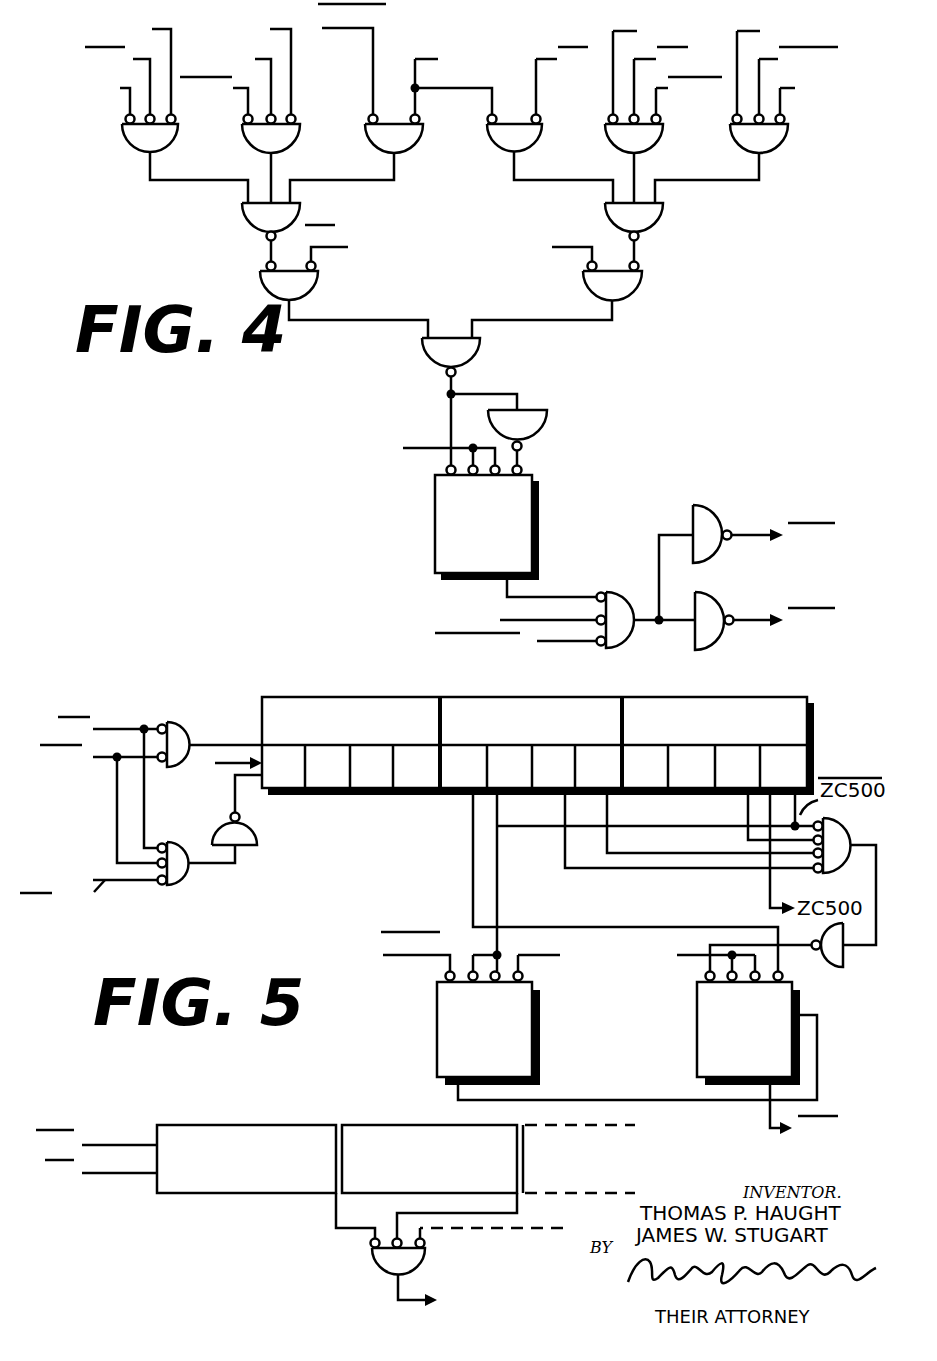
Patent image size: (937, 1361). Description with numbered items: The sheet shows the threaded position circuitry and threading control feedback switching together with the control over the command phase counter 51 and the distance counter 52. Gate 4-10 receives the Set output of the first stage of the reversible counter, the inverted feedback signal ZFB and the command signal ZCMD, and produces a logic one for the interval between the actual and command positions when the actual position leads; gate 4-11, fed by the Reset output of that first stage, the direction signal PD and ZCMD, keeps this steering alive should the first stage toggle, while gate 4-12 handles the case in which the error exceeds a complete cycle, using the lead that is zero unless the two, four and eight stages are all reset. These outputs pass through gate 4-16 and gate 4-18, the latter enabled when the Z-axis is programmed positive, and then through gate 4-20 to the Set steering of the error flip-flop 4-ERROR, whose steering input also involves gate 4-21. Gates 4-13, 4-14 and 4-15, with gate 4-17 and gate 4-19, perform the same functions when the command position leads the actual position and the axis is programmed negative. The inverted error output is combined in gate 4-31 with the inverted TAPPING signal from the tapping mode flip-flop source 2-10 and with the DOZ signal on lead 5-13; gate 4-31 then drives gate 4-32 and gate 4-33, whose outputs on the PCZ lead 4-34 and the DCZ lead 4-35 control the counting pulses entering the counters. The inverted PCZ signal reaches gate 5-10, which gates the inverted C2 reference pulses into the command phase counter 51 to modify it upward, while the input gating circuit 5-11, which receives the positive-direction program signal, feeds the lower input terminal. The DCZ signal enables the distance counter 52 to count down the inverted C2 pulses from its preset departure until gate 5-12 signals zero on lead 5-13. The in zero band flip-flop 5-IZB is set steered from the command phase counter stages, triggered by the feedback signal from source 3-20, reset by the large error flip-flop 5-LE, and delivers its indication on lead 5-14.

In FIG. 4, the gate 4-10 is at (128, 150).
In FIG. 4, the gate 4-11 is at (253, 150).
In FIG. 4, the gate 4-12 is at (366, 148).
In FIG. 4, the gate 4-13 is at (782, 148).
In FIG. 4, the gate 4-14 is at (664, 147).
In FIG. 4, the gate 4-15 is at (543, 146).
In FIG. 4, the gate 4-16 is at (242, 210).
In FIG. 4, the gate 4-17 is at (661, 230).
In FIG. 4, the gate 4-18 is at (316, 288).
In FIG. 4, the gate 4-19 is at (584, 288).
In FIG. 4, the gate 4-20 is at (476, 353).
In FIG. 4, the gate 4-21 is at (546, 427).
In FIG. 4, the error flip-flop 4-ERROR is at (492, 508).
In FIG. 4, the gate 4-31 is at (620, 583).
In FIG. 4, the gate 4-32 is at (695, 522).
In FIG. 4, the gate 4-33 is at (692, 642).
In FIG. 4, the PCZ-bar lead 4-34 is at (747, 542).
In FIG. 5, the PCZ-bar lead 4-34 is at (100, 758).
In FIG. 4, the DCZ lead 4-35 is at (752, 626).
In FIG. 5, the DCZ lead 4-35 is at (116, 1131).
In FIG. 4, the TAPPING-bar source 2-10 is at (548, 643).
In FIG. 5, the ZFB feedback signal source 3-20 is at (680, 956).
In FIG. 5, the command phase counter 51 is at (422, 697).
In FIG. 5, the distance counter 52 is at (438, 1125).
In FIG. 5, the gate 5-10 is at (171, 722).
In FIG. 5, the input gating circuit 5-11 is at (186, 877).
In FIG. 5, the gate 5-12 is at (370, 1252).
In FIG. 4, the DOZ lead 5-13 is at (503, 618).
In FIG. 5, the DOZ lead 5-13 is at (397, 1300).
In FIG. 5, the IZB-bar lead 5-14 is at (768, 1130).
In FIG. 5, the large error flip-flop 5-LE is at (479, 1008).
In FIG. 5, the in zero band flip-flop 5-IZB is at (648, 1036).